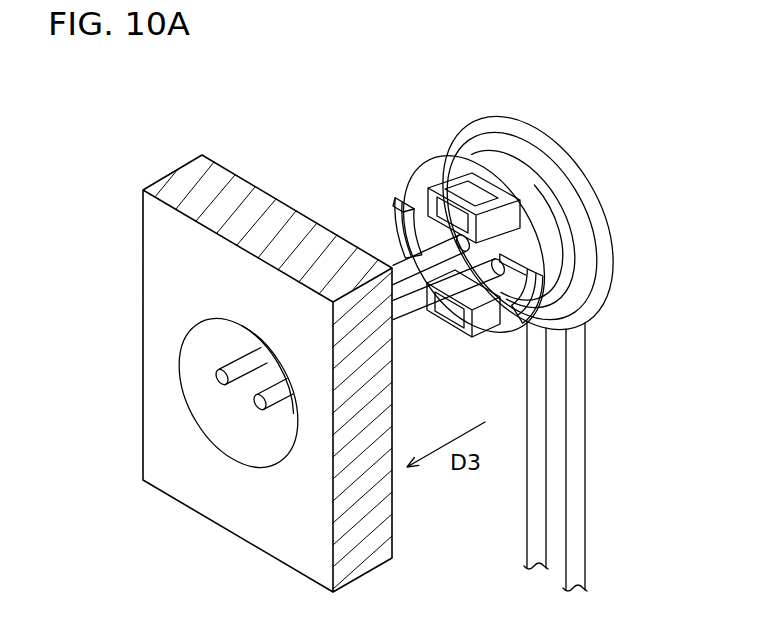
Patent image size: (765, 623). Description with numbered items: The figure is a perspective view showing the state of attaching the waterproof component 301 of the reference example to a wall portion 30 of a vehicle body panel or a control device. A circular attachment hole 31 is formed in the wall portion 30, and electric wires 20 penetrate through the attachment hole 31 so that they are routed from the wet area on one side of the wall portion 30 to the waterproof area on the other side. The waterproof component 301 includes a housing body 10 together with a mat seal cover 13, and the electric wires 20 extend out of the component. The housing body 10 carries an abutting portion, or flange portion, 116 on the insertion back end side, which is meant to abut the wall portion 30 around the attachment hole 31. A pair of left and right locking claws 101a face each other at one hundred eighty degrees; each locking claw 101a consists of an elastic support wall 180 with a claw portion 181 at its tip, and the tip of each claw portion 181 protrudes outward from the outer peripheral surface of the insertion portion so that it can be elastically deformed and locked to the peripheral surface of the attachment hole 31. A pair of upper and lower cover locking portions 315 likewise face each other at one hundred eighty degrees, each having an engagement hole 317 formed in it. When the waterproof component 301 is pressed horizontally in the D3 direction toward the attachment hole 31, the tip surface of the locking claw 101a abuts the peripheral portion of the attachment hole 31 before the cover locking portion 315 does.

The waterproof component 301 is at (528, 90).
The wall portion 30 is at (229, 212).
The attachment hole 31 is at (250, 442).
The electric wire 20 is at (258, 400).
The housing body 10 is at (622, 256).
The abutting portion (flange portion) 116 is at (592, 262).
The mat seal cover 13 is at (513, 234).
The cover locking portion 315 is at (503, 200).
The engagement hole 317 is at (476, 178).
The elastic support wall 180 is at (417, 224).
The claw portion 181 is at (394, 238).
The locking claw 101a is at (385, 210).